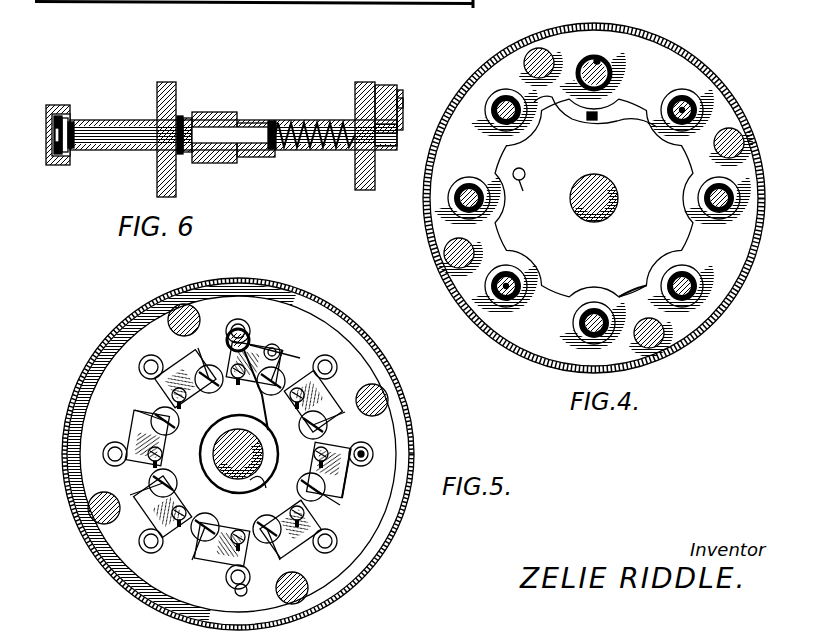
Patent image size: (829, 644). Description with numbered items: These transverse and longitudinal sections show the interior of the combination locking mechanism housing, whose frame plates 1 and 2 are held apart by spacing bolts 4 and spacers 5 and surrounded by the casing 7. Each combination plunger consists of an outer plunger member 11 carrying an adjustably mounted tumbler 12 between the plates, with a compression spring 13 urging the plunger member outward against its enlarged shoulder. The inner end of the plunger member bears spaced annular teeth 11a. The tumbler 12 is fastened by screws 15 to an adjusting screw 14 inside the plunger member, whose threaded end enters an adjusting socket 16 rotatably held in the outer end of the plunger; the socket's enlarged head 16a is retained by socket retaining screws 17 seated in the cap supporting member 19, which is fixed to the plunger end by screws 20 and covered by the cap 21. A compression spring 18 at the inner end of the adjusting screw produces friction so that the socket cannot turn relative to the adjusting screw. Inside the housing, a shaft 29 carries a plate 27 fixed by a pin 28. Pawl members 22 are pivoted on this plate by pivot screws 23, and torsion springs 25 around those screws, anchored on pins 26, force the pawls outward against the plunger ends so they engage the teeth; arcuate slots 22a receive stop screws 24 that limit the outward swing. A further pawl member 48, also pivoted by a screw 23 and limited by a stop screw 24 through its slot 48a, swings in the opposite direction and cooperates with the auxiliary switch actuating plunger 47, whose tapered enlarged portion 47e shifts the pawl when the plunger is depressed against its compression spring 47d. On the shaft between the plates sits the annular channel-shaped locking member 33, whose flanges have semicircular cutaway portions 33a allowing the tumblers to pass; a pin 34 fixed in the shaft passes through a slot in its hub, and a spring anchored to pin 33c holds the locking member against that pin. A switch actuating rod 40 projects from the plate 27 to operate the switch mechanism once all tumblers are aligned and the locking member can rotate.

In FIG. 6, the plate 1 is at (157, 183).
In FIG. 6, the plate 2 is at (355, 182).
In FIG. 5, the plate 2 is at (81, 385).
In FIG. 4, the spacing bolts 4 is at (543, 49).
In FIG. 5, the spacing bolts 4 is at (172, 310).
In FIG. 5, the spacers 5 is at (182, 298).
In FIG. 4, the casing 7 is at (660, 38).
In FIG. 5, the casing 7 is at (114, 330).
In FIG. 6, the outer plunger member 11 is at (105, 120).
In FIG. 4, the outer plunger member 11 is at (694, 111).
In FIG. 5, the outer plunger member 11 is at (333, 362).
In FIG. 6, the annular ridges or teeth 11a is at (390, 150).
In FIG. 5, the annular ridges or teeth 11a is at (368, 450).
In FIG. 6, the tumbler 12 is at (225, 112).
In FIG. 4, the tumbler 12 is at (690, 92).
In FIG. 6, the compression spring 13 is at (300, 124).
In FIG. 4, the compression spring 13 is at (697, 104).
In FIG. 6, the adjusting screw 14 is at (181, 155).
In FIG. 6, the screws 15 is at (200, 160).
In FIG. 6, the adjusting socket 16 is at (108, 145).
In FIG. 6, the enlarged head 16a is at (58, 160).
In FIG. 6, the socket retaining screws 17 is at (58, 114).
In FIG. 6, the compression spring 18 is at (272, 150).
In FIG. 4, the compression spring 18 is at (706, 113).
In FIG. 6, the cap supporting member 19 is at (66, 116).
In FIG. 6, the screws 20 is at (74, 120).
In FIG. 6, the cap 21 is at (50, 160).
In FIG. 6, the pawl member 22 is at (400, 92).
In FIG. 5, the pawl member 22 is at (345, 478).
In FIG. 5, the arcuate slot 22a is at (350, 463).
In FIG. 5, the pivot screw 23 is at (240, 365).
In FIG. 6, the stop screw 24 is at (405, 103).
In FIG. 5, the stop screw 24 is at (314, 418).
In FIG. 5, the torsion spring 25 is at (215, 398).
In FIG. 5, the pin 26 is at (258, 478).
In FIG. 6, the plate 27 is at (382, 85).
In FIG. 5, the plate 27 is at (243, 587).
In FIG. 5, the pin 28 is at (262, 426).
In FIG. 4, the shaft 29 is at (612, 190).
In FIG. 5, the shaft 29 is at (265, 454).
In FIG. 4, the locking member 33 is at (625, 205).
In FIG. 4, the cutaway portions 33a is at (625, 292).
In FIG. 4, the pin 33c is at (530, 190).
In FIG. 4, the pin 34 is at (594, 122).
In FIG. 5, the switch actuating rod 40 is at (278, 348).
In FIG. 4, the auxiliary switch actuating plunger 47 is at (600, 62).
In FIG. 5, the auxiliary switch actuating plunger 47 is at (248, 335).
In FIG. 4, the compression spring 47d is at (614, 74).
In FIG. 5, the enlarged portion 47e is at (239, 333).
In FIG. 5, the pawl member 48 is at (262, 362).
In FIG. 5, the slot 48a is at (300, 358).